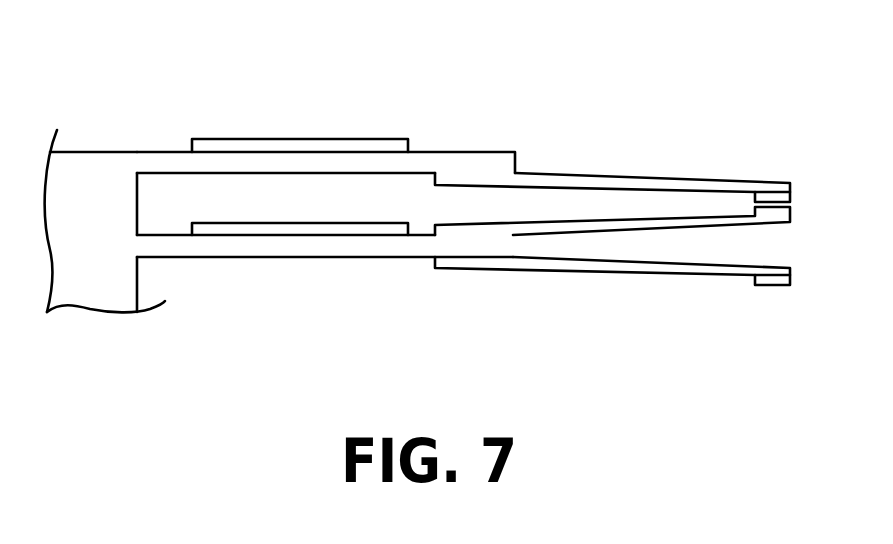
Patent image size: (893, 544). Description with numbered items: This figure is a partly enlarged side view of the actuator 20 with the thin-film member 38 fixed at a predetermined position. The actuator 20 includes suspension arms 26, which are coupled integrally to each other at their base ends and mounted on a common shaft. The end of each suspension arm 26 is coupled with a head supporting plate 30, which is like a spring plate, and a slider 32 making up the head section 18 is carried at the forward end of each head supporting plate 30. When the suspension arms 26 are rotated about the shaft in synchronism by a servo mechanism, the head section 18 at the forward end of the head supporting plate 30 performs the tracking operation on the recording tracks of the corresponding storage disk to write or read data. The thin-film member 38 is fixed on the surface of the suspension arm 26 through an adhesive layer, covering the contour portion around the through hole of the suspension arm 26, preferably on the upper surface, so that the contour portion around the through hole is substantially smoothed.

The chip body / support member 20 is at (96, 151).
The suspension arm 26 is at (441, 160).
The thin-film member 38 is at (257, 139).
The head supporting plate 30 is at (612, 175).
The head section 18 is at (771, 196).
The slider 32 is at (759, 286).